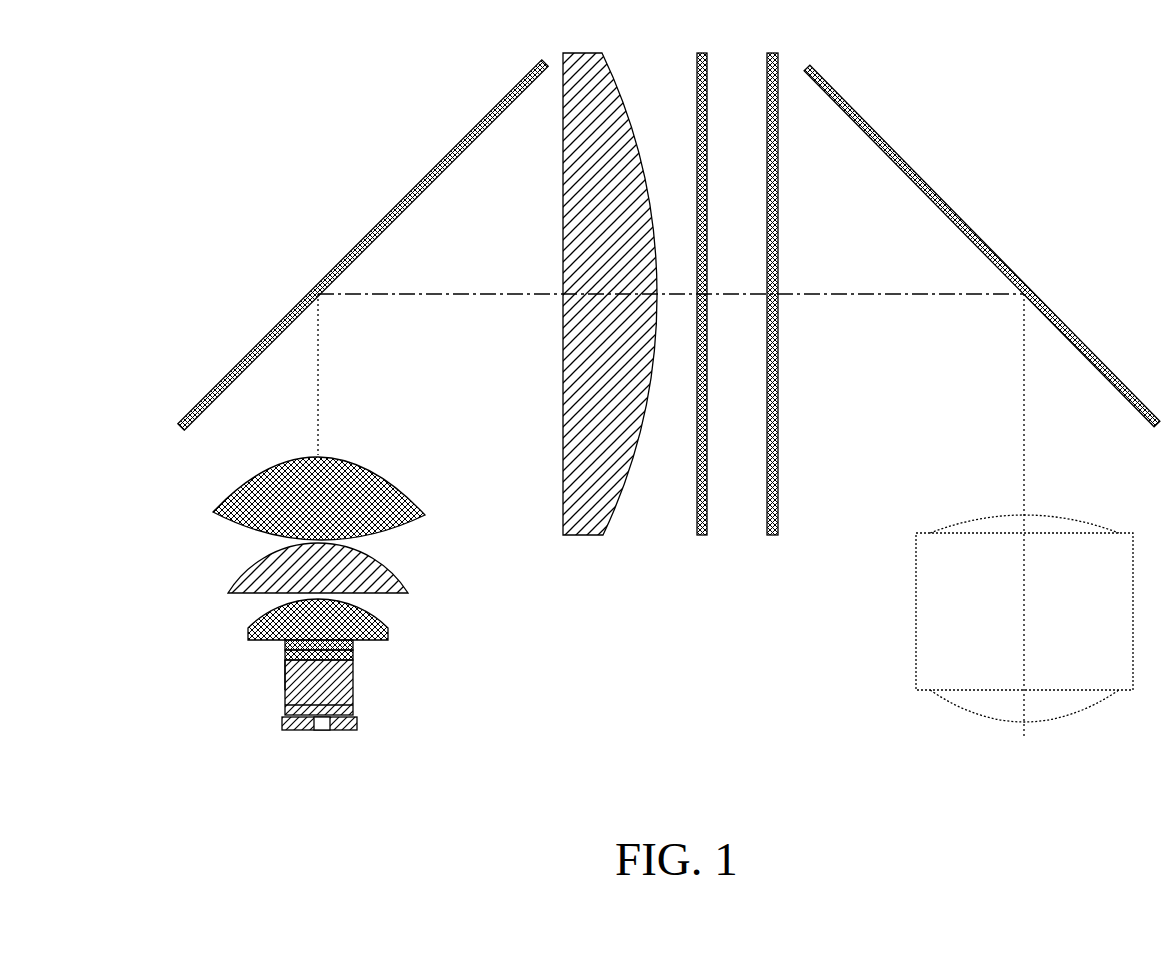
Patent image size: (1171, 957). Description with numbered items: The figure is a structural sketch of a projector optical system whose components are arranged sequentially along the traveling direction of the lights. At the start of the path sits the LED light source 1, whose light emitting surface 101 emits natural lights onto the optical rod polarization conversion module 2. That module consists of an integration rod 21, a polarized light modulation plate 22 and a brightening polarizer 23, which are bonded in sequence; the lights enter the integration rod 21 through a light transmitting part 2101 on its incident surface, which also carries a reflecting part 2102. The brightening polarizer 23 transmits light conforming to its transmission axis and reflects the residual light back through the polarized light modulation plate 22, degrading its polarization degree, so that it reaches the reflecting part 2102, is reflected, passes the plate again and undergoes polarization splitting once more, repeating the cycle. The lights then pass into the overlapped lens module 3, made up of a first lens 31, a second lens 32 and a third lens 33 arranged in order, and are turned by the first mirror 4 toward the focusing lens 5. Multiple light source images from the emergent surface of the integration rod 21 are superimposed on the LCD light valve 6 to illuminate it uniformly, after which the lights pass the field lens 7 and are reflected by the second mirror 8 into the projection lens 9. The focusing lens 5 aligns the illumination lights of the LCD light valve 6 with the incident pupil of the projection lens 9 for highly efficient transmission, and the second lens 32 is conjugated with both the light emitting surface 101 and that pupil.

The LED light source 1 is at (353, 723).
The light emitting surface 101 is at (320, 730).
The optical rod polarization conversion module 2 is at (365, 666).
The integration rod 21 is at (355, 688).
The light transmitting part 2101 is at (285, 682).
The reflecting part 2102 is at (285, 713).
The polarized light modulation plate 22 is at (355, 660).
The brightening polarizer 23 is at (355, 650).
The overlapped lens module 3 is at (375, 548).
The first lens 31 is at (365, 603).
The second lens 32 is at (387, 558).
The third lens 33 is at (390, 533).
The first mirror 4 is at (435, 178).
The focusing lens 5 is at (562, 423).
The LCD light valve 6 is at (703, 535).
The field lens 7 is at (777, 450).
The second mirror 8 is at (900, 167).
The projection lens 9 is at (947, 705).